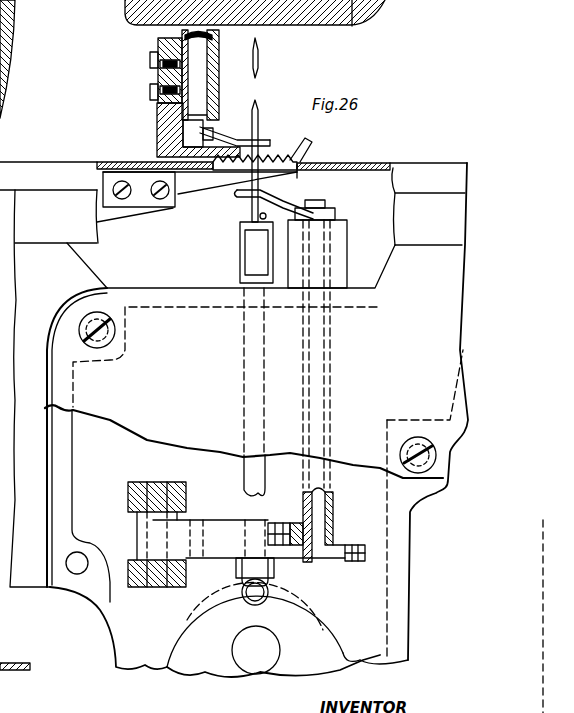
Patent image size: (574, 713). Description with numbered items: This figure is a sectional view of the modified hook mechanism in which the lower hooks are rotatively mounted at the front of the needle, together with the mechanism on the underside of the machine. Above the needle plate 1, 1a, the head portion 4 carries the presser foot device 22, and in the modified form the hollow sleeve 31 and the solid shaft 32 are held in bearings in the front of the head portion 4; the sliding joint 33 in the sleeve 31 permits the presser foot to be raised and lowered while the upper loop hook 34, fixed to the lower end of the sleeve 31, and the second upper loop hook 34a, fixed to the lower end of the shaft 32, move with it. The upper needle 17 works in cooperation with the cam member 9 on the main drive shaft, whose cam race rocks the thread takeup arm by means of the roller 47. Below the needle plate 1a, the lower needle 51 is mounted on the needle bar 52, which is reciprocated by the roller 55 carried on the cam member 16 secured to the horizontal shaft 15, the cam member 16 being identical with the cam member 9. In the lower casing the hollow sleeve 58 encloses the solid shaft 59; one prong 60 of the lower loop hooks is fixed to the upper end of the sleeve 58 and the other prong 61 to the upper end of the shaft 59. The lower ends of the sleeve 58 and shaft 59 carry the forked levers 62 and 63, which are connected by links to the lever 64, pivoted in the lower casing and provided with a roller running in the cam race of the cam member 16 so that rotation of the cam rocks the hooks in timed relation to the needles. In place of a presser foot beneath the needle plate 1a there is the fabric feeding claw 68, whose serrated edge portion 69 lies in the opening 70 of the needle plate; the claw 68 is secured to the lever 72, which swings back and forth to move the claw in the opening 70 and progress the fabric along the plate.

The needle plate 1 is at (43, 173).
The needle plate 1a is at (372, 164).
The head portion 4 is at (10, 12).
The cam member 9 is at (9, 35).
The horizontal shaft 15 is at (255, 655).
The cam member 16 is at (212, 662).
The upper needle 17 is at (262, 57).
The presser foot device 22 is at (157, 128).
The hollow sleeve 31 is at (198, 48).
The solid shaft 32 is at (206, 32).
The sliding joint 33 is at (163, 45).
The upper loop hook 34 is at (270, 137).
The second upper loop hook 34a is at (217, 130).
The roller 47 is at (352, 26).
The lower needle 51 is at (258, 112).
The needle bar 52 is at (244, 472).
The roller 55 is at (262, 604).
The hollow sleeve 58 is at (318, 477).
The solid shaft 59 is at (325, 500).
The prong 60 is at (335, 205).
The prong 61 is at (300, 207).
The forked lever 62 is at (288, 523).
The forked lever 63 is at (347, 555).
The lever 64 is at (210, 540).
The fabric feeding claw 68 is at (222, 172).
The serrated edge portion 69 is at (275, 154).
The opening 70 is at (195, 182).
The lever 72 is at (118, 212).